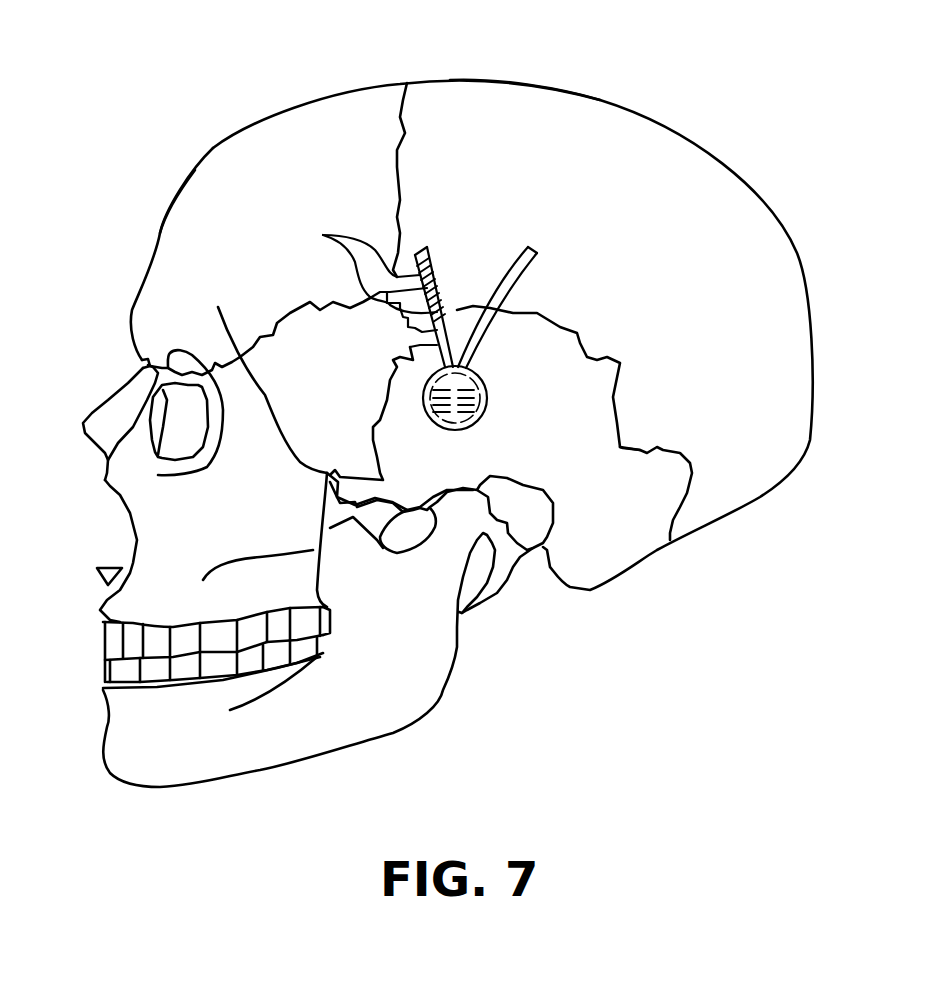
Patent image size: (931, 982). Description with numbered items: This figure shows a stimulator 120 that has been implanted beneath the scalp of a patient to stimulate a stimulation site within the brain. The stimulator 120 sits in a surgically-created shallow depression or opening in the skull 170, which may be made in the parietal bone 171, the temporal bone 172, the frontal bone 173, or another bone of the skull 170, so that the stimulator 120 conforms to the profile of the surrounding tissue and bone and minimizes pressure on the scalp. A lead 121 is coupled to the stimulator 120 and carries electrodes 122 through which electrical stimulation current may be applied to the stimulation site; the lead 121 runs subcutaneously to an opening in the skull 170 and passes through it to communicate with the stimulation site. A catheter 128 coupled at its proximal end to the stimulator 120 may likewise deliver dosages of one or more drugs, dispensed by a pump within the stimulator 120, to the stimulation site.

The skull 170 is at (213, 150).
The parietal bone 171 is at (522, 115).
The temporal bone 172 is at (587, 382).
The frontal bone 173 is at (288, 163).
The stimulator 120 is at (433, 417).
The lead 121 is at (410, 347).
The electrodes 122 is at (323, 235).
The catheter 128 is at (513, 291).